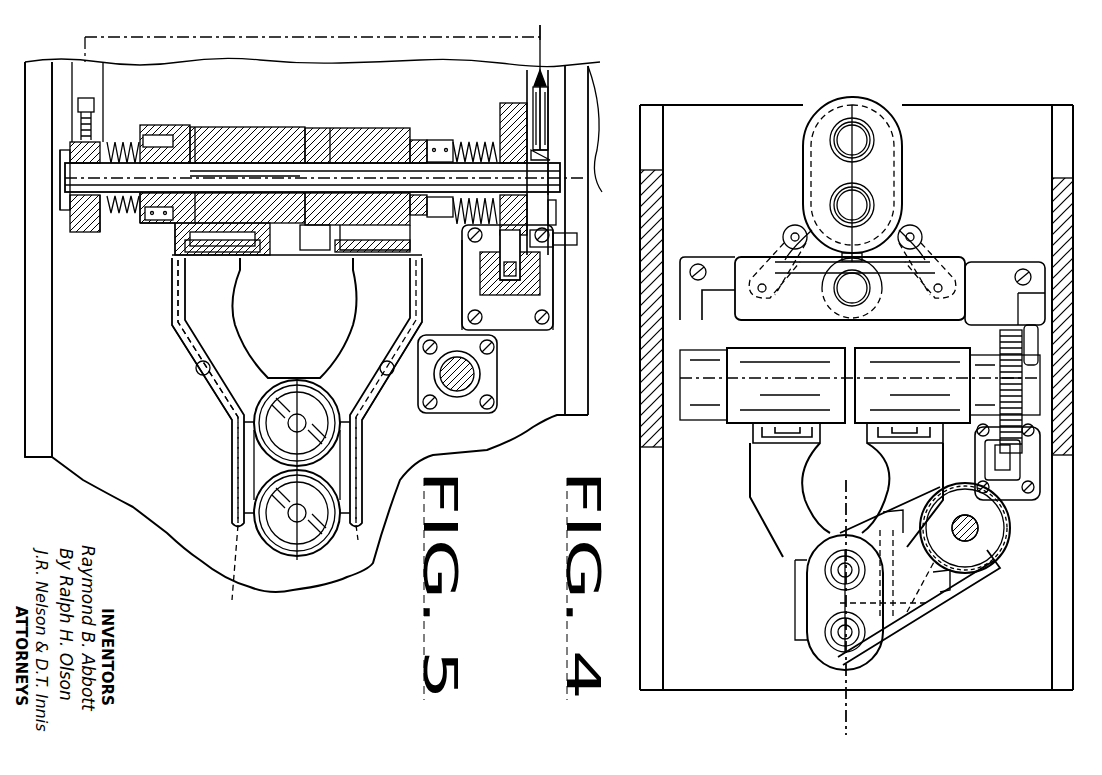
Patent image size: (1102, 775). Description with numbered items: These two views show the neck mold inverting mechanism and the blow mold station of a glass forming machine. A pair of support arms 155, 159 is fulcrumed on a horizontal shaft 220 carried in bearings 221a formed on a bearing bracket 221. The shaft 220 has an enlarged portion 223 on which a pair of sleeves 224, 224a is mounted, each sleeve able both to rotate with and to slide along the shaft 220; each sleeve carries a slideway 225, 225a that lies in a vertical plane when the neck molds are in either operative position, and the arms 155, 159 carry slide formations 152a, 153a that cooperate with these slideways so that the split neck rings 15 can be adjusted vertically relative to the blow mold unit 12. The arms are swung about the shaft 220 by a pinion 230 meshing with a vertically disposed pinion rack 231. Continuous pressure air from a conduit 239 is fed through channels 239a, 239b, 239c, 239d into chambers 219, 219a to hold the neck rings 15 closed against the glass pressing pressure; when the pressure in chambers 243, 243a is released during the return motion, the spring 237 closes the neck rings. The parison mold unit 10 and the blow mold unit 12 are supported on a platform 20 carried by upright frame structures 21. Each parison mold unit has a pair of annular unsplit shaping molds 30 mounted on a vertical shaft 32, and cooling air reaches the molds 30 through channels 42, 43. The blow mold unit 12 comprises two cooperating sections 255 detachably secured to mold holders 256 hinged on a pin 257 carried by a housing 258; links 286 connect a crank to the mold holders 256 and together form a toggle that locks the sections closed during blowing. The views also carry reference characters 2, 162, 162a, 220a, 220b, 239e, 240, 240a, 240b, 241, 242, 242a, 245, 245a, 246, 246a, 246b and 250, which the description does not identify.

In FIG. 4, the section line 2- 2 is at (872, 498).
In FIG. 5, the parison mold unit 10 is at (542, 82).
In FIG. 4, the parison mold unit 10 is at (890, 655).
In FIG. 4, the blow mold unit 12 is at (913, 160).
In FIG. 5, the split neck ring 15 is at (300, 528).
In FIG. 5, the platform 20 is at (545, 392).
In FIG. 4, the platform 20 is at (1022, 664).
In FIG. 5, the upright frame structure 21 is at (52, 395).
In FIG. 4, the upright frame structure 21 is at (640, 447).
In FIG. 4, the annular unsplit shaping mold 30 is at (825, 632).
In FIG. 4, the vertical shaft 32 is at (980, 535).
In FIG. 4, the channel 42 is at (975, 575).
In FIG. 4, the channel 43 is at (915, 625).
In FIG. 5, the slide formation 152a is at (445, 337).
In FIG. 5, the slide formation 153a is at (172, 256).
In FIG. 5, the support arm 155 is at (392, 352).
In FIG. 4, the support arm 155 is at (925, 485).
In FIG. 5, the support arm 159 is at (202, 349).
In FIG. 4, the support arm 159 is at (785, 490).
In FIG. 5, the right yoke block 162 is at (345, 252).
In FIG. 5, the left yoke block 162a is at (270, 235).
In FIG. 5, the chamber 219 is at (462, 250).
In FIG. 5, the chamber 219a is at (130, 225).
In FIG. 5, the shaft 220 is at (70, 212).
In FIG. 5, the end flange right 220a is at (556, 180).
In FIG. 5, the flange lower portion 220b is at (100, 235).
In FIG. 5, the bearing bracket 221 is at (45, 235).
In FIG. 4, the bearing bracket 221 is at (716, 262).
In FIG. 5, the bearing 221a is at (575, 110).
In FIG. 4, the bearing 221a is at (686, 415).
In FIG. 5, the enlarged portion 223 is at (260, 128).
In FIG. 5, the sleeve 224 is at (372, 130).
In FIG. 5, the sleeve 224a is at (232, 129).
In FIG. 5, the slideway 225 is at (353, 262).
In FIG. 5, the slideway 225a is at (245, 256).
In FIG. 5, the pinion 230 is at (508, 128).
In FIG. 5, the pinion rack 231 is at (553, 280).
In FIG. 5, the spring 237 is at (476, 142).
In FIG. 5, the conduit 239 is at (540, 30).
In FIG. 5, the channel 239a is at (533, 105).
In FIG. 5, the channel 239b is at (103, 100).
In FIG. 5, the channel 239c is at (60, 150).
In FIG. 5, the channel 239d is at (118, 142).
In FIG. 5, the screws 239e is at (80, 105).
In FIG. 5, the lock nut 240 is at (553, 240).
In FIG. 5, the bolt shank 240a is at (577, 236).
In FIG. 5, the bolt washer 240b is at (556, 212).
In FIG. 5, the collar 241 is at (362, 180).
In FIG. 5, the right pivot arm 242 is at (420, 280).
In FIG. 5, the left pivot arm 242a is at (195, 270).
In FIG. 5, the chamber 243 is at (420, 140).
In FIG. 5, the chamber 243a is at (175, 136).
In FIG. 5, the bracket wall 245 is at (462, 292).
In FIG. 5, the bracket wall left 245a is at (150, 225).
In FIG. 5, the arm upper portion 246 is at (185, 345).
In FIG. 5, the arm lower portion 246a is at (232, 432).
In FIG. 5, the arm end 246b is at (297, 580).
In FIG. 5, the pivot pin 250 is at (198, 375).
In FIG. 4, the blow mold section 255 is at (858, 92).
In FIG. 4, the mold holder 256 is at (815, 125).
In FIG. 4, the pin 257 is at (870, 300).
In FIG. 4, the housing 258 is at (938, 262).
In FIG. 4, the link 286 is at (784, 240).